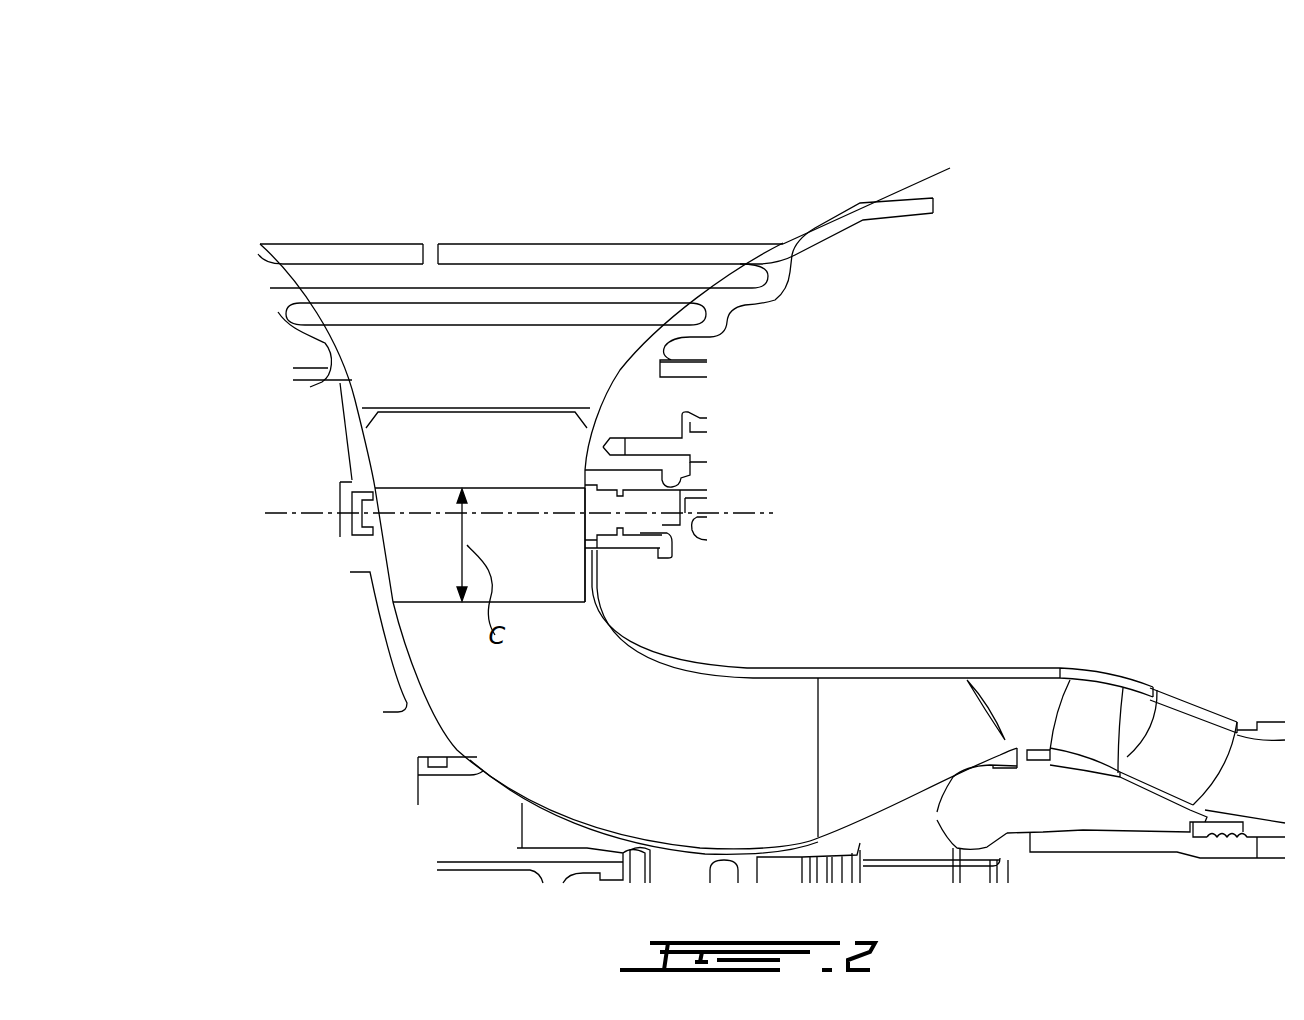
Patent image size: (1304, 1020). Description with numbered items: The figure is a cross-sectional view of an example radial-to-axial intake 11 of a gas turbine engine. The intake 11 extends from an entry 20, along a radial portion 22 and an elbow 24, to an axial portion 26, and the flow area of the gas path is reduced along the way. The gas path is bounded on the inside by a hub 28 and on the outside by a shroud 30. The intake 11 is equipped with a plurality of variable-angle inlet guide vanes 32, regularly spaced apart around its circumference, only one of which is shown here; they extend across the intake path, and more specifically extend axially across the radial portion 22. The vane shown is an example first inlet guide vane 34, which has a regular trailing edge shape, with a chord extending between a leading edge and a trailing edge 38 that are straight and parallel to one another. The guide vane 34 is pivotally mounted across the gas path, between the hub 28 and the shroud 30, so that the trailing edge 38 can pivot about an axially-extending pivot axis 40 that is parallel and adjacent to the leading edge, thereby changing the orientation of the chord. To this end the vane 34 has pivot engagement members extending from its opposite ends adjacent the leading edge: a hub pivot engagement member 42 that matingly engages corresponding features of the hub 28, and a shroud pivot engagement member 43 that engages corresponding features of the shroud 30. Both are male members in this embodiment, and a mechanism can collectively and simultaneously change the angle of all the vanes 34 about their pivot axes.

The radial-to-axial intake 11 is at (793, 176).
The entry 20 is at (625, 203).
The radial portion 22 is at (416, 460).
The elbow 24 is at (598, 750).
The axial portion 26 is at (522, 488).
The hub 28 is at (355, 382).
The shroud 30 is at (607, 385).
The variable-angle inlet guide vanes 32 is at (513, 565).
The first inlet guide vane 34 is at (406, 565).
The trailing edge 38 is at (430, 602).
The pivot axis 40 is at (750, 513).
The hub pivot engagement member 42 is at (360, 515).
The shroud pivot engagement member 43 is at (641, 527).